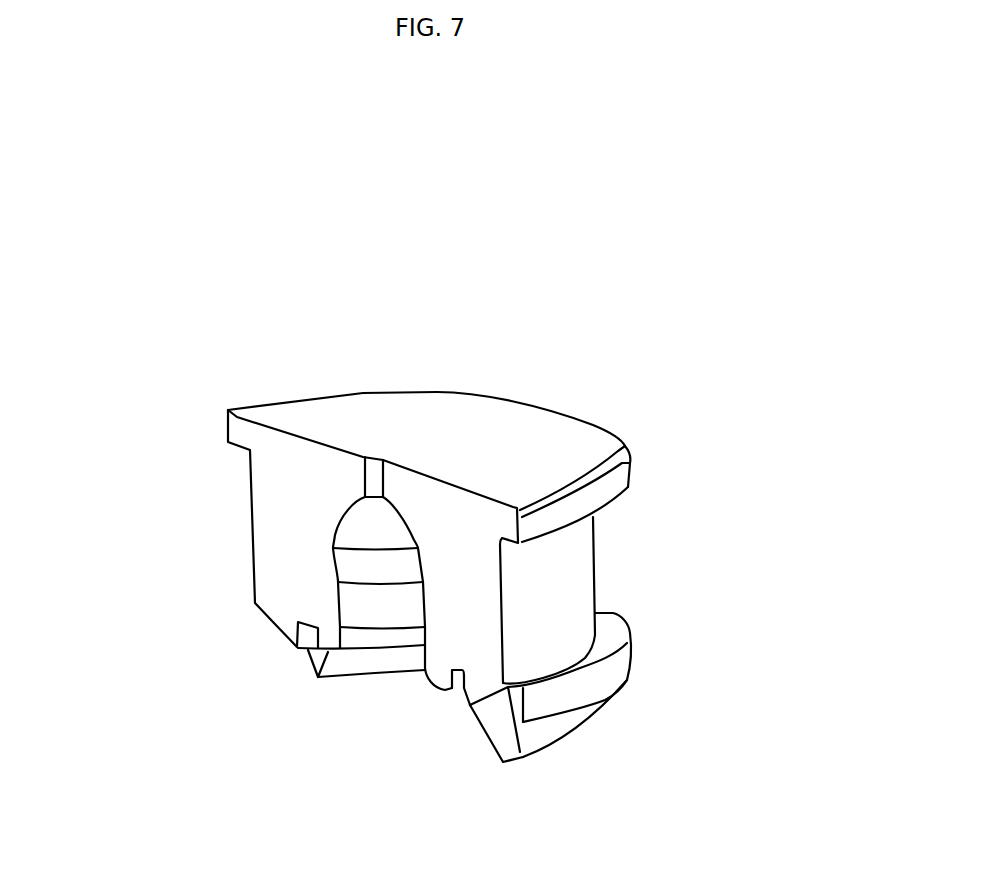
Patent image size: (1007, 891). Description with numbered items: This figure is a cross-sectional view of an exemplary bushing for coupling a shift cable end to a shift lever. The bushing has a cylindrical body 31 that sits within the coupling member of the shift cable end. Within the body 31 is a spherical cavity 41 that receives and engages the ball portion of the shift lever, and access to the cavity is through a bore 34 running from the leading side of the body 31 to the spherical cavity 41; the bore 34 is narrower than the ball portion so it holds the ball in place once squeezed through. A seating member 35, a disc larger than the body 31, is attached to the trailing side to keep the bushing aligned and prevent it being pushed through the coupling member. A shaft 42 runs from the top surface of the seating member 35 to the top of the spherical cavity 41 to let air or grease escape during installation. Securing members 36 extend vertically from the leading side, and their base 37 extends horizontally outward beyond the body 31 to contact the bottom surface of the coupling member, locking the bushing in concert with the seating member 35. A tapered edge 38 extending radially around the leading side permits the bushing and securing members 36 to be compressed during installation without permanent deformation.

The body 31 is at (557, 577).
The bore 34 is at (383, 610).
The seating member 35 is at (360, 415).
The securing members 36 is at (600, 682).
The base 37 is at (520, 752).
The tapered edge 38 is at (273, 622).
The spherical cavity 41 is at (360, 530).
The shaft 42 is at (387, 460).